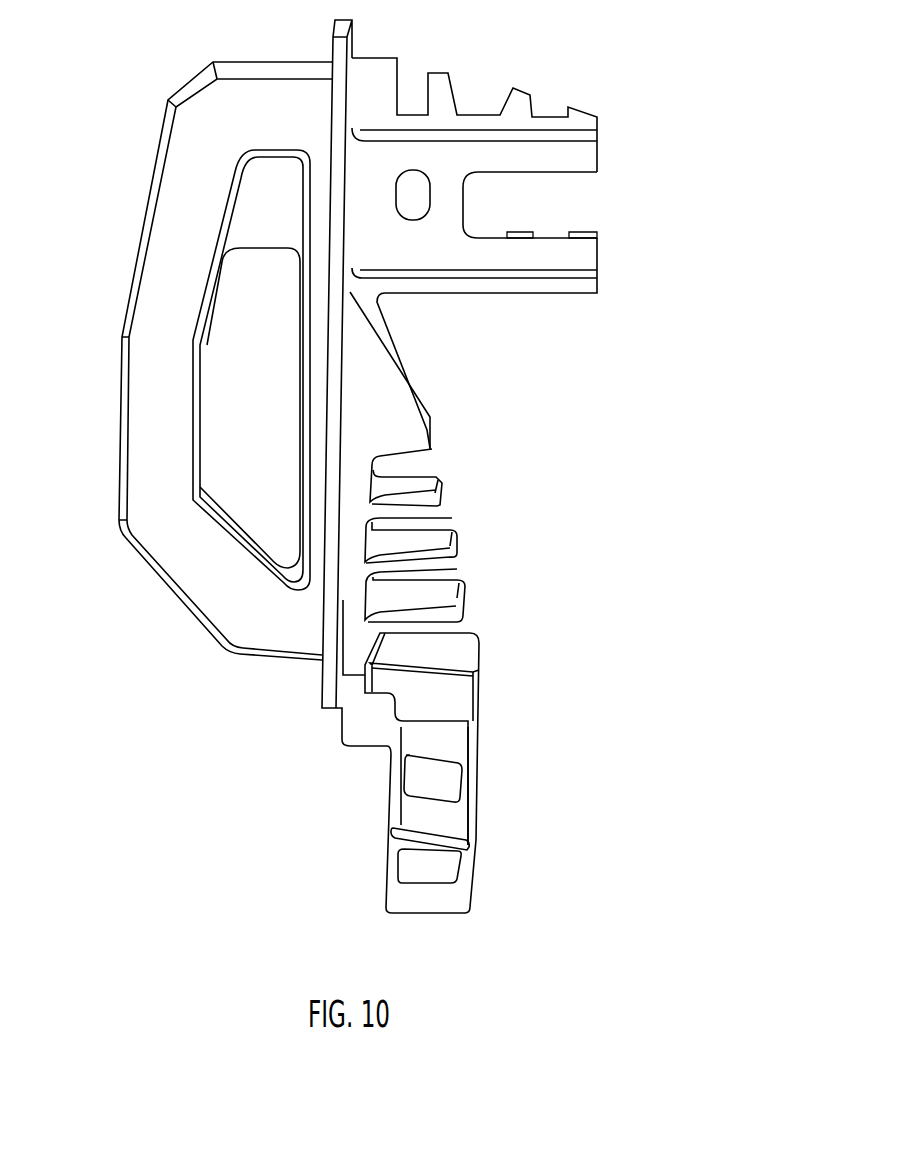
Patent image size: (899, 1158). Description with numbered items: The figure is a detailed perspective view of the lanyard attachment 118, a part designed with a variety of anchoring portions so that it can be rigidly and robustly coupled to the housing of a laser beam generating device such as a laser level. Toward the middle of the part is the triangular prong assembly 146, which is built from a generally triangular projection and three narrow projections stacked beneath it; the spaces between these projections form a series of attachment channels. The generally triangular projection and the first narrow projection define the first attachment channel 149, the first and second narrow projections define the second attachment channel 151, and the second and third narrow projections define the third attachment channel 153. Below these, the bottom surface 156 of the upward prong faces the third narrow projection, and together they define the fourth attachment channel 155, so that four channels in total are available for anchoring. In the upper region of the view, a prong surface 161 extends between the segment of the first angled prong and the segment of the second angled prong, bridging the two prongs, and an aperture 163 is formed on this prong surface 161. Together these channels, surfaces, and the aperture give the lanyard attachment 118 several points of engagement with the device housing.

The lanyard attachment 118 is at (130, 66).
The triangular prong assembly 146 is at (634, 488).
The first attachment channel 149 is at (445, 463).
The second attachment channel 151 is at (452, 514).
The third attachment channel 153 is at (471, 568).
The fourth attachment channel 155 is at (481, 621).
The bottom surface 156 is at (440, 657).
The prong surface 161 is at (412, 237).
The aperture 163 is at (418, 195).